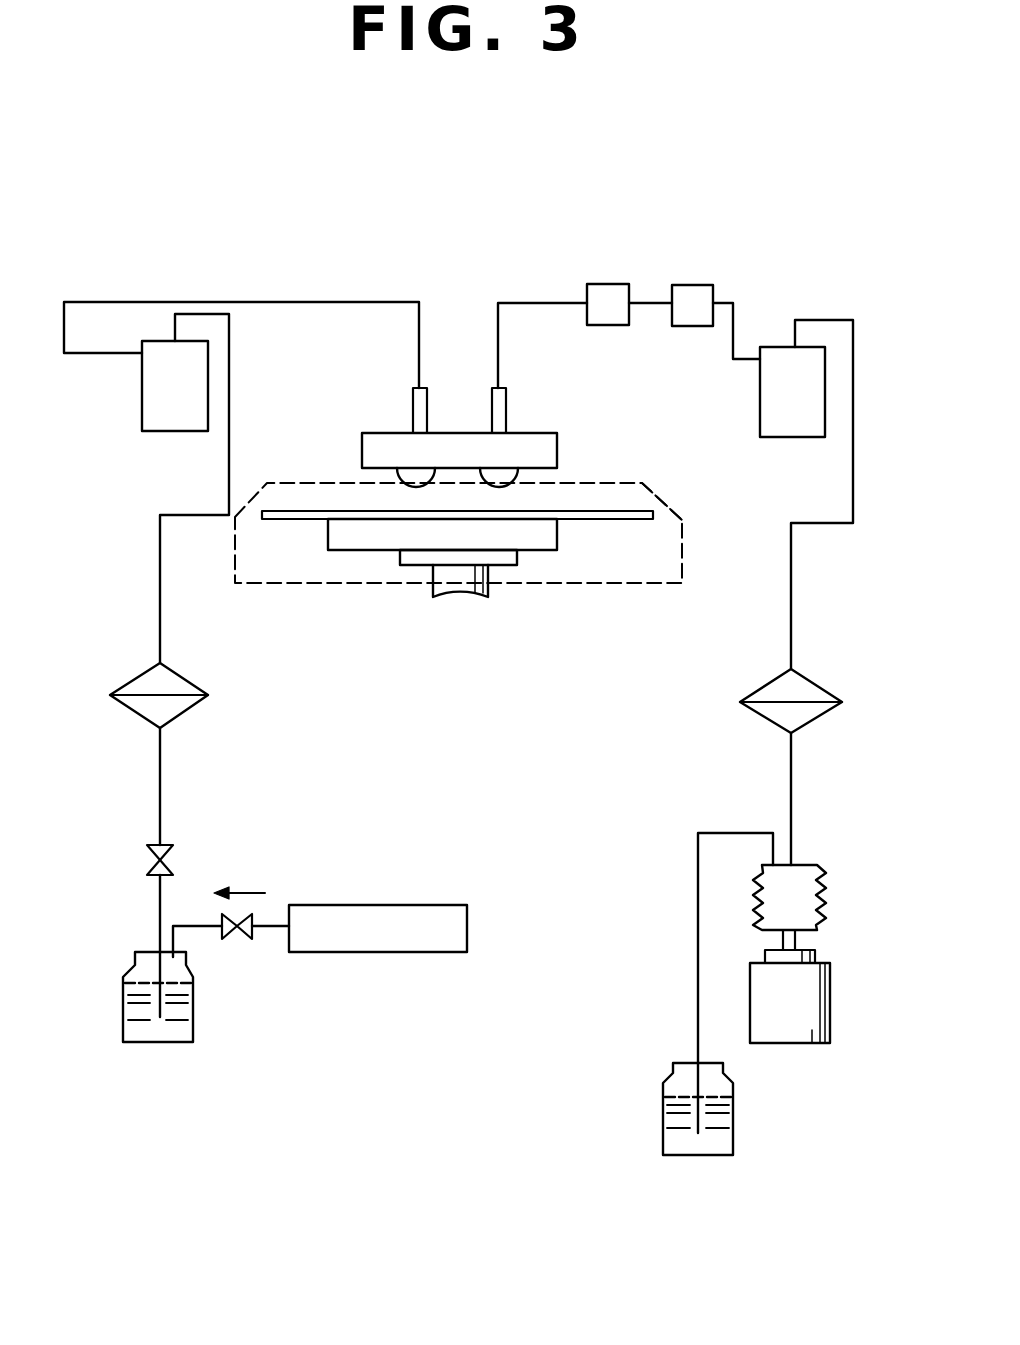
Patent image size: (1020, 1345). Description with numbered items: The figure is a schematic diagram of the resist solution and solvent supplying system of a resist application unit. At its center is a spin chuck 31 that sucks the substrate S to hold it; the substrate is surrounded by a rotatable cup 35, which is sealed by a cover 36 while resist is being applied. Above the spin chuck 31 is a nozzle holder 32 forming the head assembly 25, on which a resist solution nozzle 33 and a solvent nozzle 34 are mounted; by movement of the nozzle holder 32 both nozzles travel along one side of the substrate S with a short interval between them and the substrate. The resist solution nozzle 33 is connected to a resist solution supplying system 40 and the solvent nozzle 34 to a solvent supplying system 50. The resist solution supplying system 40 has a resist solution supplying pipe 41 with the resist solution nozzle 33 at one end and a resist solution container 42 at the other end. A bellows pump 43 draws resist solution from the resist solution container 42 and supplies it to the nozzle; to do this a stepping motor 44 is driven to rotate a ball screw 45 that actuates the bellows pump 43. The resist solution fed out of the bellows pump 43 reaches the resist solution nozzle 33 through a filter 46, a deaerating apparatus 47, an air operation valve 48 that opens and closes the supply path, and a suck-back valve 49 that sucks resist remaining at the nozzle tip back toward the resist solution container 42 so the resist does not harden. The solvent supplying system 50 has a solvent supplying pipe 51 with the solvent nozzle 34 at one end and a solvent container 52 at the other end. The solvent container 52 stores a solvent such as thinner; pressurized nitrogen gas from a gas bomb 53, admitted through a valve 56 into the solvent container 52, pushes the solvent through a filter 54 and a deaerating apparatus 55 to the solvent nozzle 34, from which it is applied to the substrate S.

The ink jet head 25 is at (512, 266).
The spin chuck 31 is at (538, 552).
The nozzle holder 32 is at (547, 433).
The resist solution nozzle 33 is at (520, 482).
The solvent nozzle 34 is at (405, 482).
The rotatable cup 35 is at (682, 563).
The cover 36 is at (647, 485).
The substrate S is at (630, 519).
The resist solution supplying system 40 is at (755, 298).
The resist solution supplying pipe 41 is at (550, 303).
The resist solution container 42 is at (733, 1117).
The bellows pump 43 is at (822, 885).
The stepping motor 44 is at (817, 1000).
The ball screw 45 is at (797, 937).
The filter 46 is at (822, 683).
The deaerating apparatus 47 is at (788, 437).
The air operation valve 48 is at (692, 285).
The suck-back valve 49 is at (613, 284).
The solvent supplying system 50 is at (197, 277).
The solvent supplying pipe 51 is at (330, 302).
The solvent container 52 is at (193, 1020).
The gas bomb 53 is at (370, 952).
The filter 54 is at (193, 708).
The deaerating apparatus 55 is at (150, 419).
The valve 56 is at (263, 926).